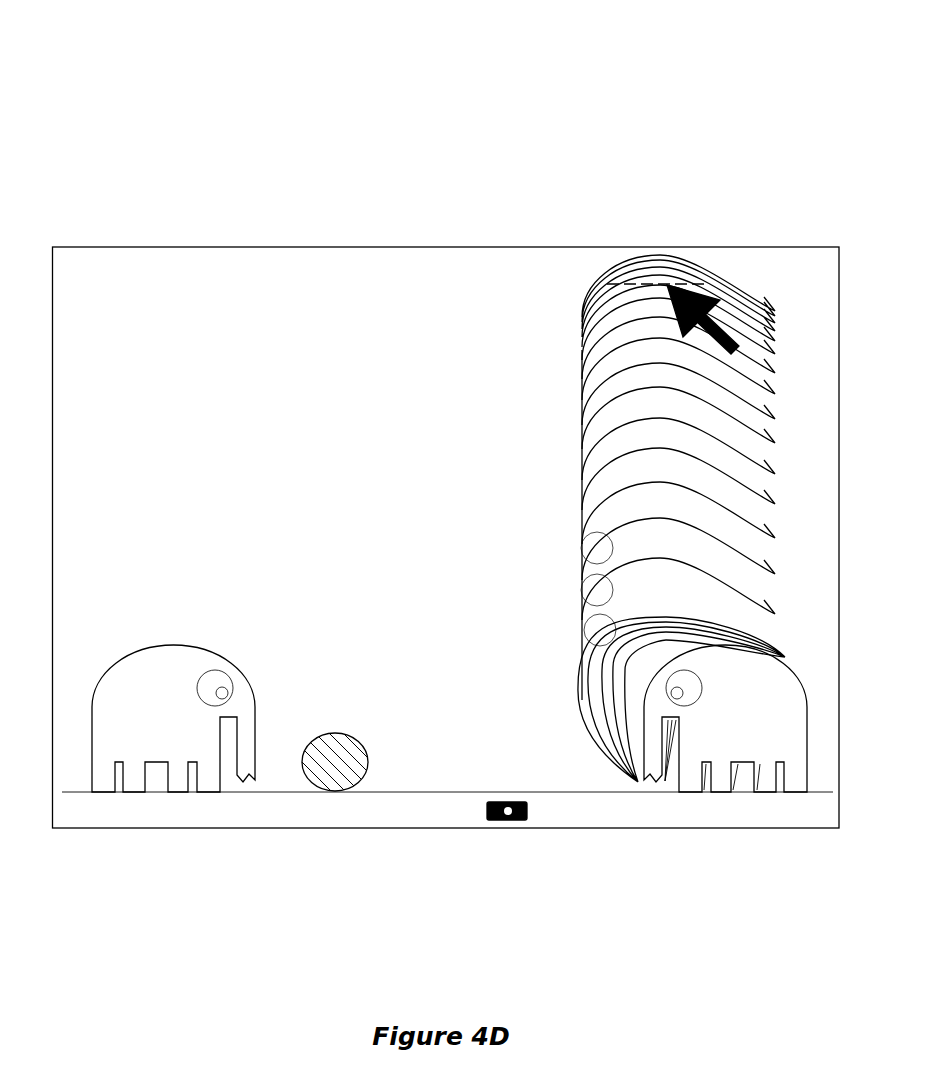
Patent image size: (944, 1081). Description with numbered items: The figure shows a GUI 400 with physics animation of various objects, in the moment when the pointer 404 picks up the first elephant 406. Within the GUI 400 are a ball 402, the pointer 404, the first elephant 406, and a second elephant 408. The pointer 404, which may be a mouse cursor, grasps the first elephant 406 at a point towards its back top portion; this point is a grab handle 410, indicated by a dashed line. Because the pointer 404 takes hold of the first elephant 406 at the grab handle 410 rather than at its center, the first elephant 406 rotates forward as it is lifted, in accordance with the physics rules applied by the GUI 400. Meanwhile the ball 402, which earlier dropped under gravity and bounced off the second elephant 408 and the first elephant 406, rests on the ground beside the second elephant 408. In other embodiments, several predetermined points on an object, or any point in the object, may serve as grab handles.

The GUI 400 is at (437, 205).
The ball 402 is at (343, 748).
The pointer 404 is at (707, 310).
The first elephant 406 is at (783, 692).
The second elephant 408 is at (170, 680).
The grab handle 410 is at (658, 283).